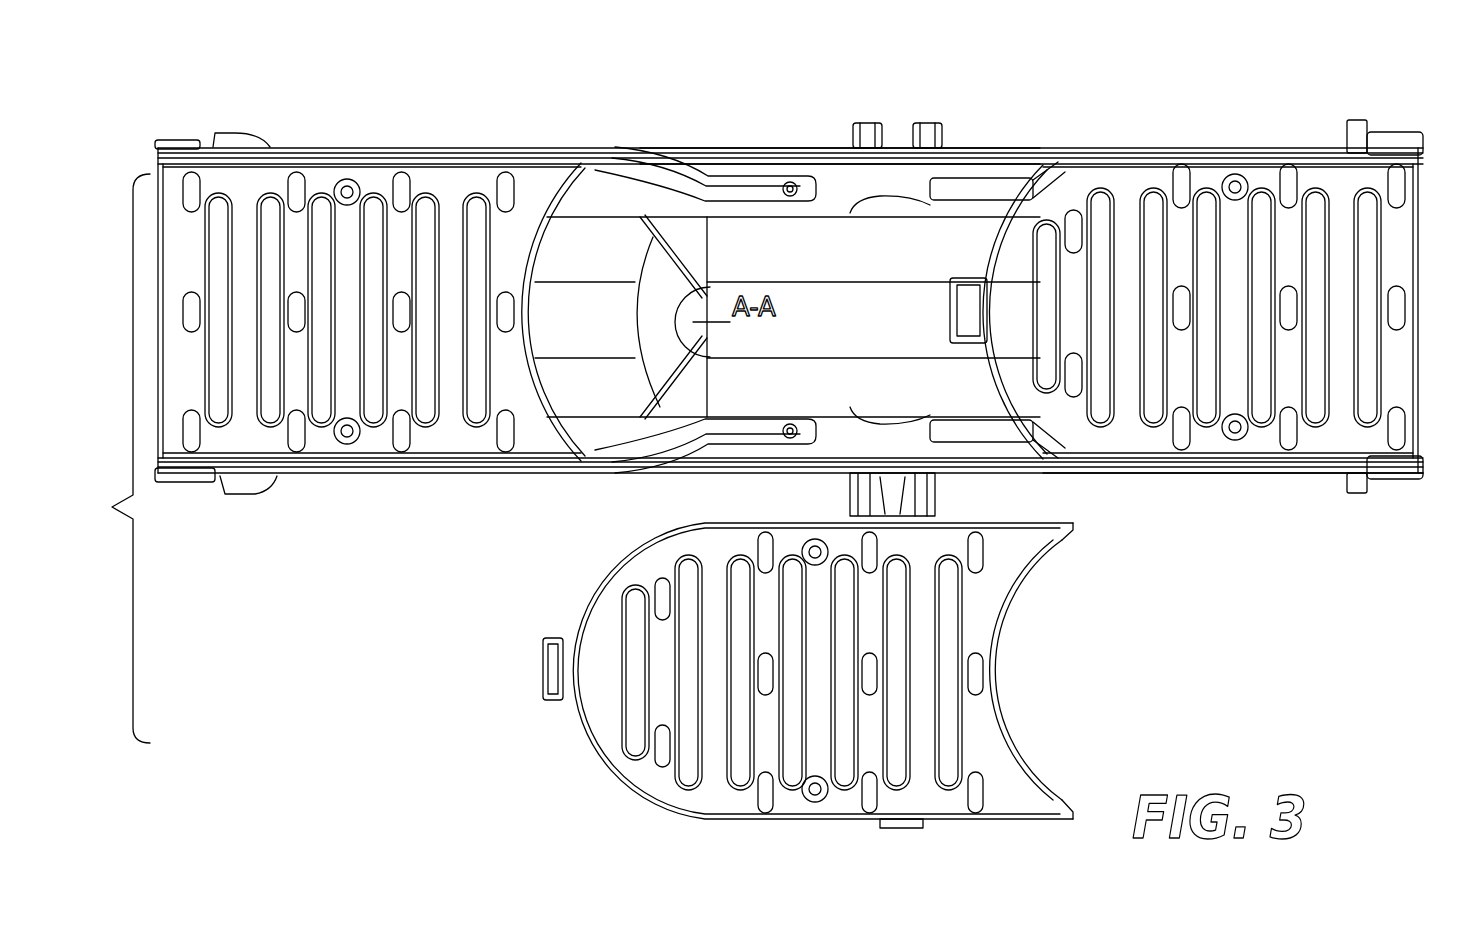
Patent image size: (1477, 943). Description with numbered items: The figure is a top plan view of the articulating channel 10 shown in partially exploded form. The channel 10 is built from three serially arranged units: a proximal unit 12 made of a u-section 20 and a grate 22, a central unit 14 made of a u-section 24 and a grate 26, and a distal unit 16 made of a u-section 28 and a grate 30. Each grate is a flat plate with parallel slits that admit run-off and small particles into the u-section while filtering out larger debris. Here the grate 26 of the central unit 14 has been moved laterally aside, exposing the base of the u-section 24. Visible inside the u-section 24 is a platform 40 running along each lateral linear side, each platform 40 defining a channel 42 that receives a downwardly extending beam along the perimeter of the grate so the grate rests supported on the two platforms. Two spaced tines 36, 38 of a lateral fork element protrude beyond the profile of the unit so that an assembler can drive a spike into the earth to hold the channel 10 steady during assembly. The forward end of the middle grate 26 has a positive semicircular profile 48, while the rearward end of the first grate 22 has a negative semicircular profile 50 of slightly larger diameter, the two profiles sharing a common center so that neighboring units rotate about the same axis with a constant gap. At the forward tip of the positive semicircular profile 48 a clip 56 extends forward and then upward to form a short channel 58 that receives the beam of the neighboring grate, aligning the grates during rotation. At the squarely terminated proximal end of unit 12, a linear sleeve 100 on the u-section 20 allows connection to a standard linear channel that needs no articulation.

The channel 10 is at (1245, 48).
The unit 12 is at (450, 158).
The unit 14 is at (796, 146).
The unit 16 is at (1313, 130).
The u-section 20 is at (545, 155).
The grate 22 is at (318, 175).
The u-section 24 is at (740, 235).
The grate 26 is at (985, 598).
The u-section 28 is at (1295, 474).
The grate 30 is at (1160, 440).
The tine 36 is at (873, 122).
The tine 38 is at (937, 122).
The platform 40 is at (970, 188).
The channel 42 is at (955, 178).
The positive semicircular profile 48 is at (600, 760).
The negative semicircular profile 50 is at (540, 322).
The clip 56 is at (950, 315).
The channel 58 is at (978, 333).
The linear sleeve 100 is at (193, 138).